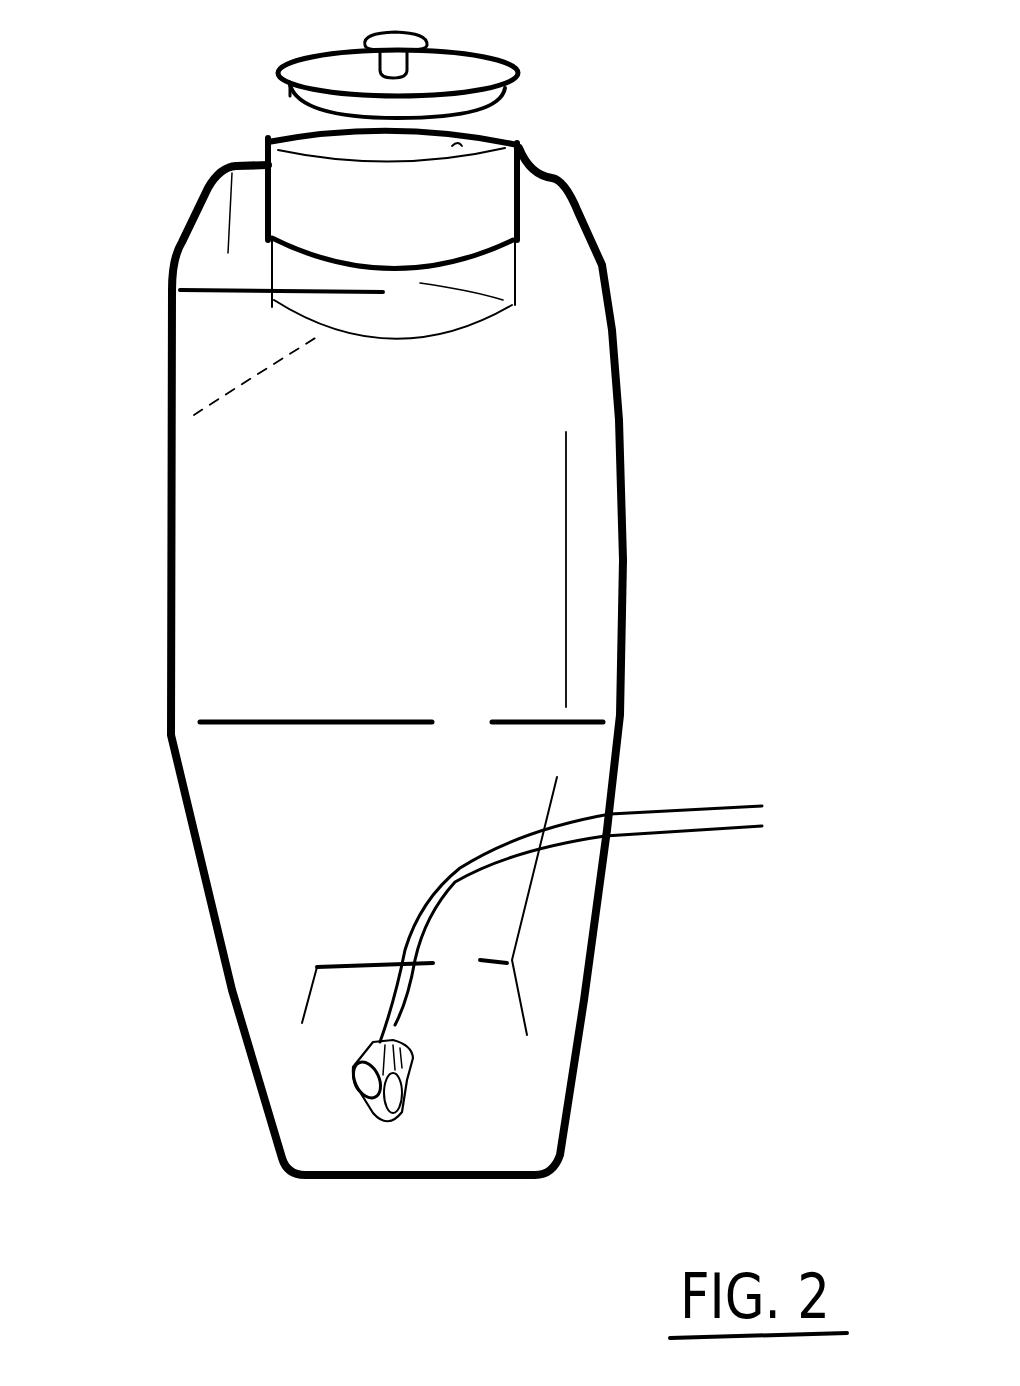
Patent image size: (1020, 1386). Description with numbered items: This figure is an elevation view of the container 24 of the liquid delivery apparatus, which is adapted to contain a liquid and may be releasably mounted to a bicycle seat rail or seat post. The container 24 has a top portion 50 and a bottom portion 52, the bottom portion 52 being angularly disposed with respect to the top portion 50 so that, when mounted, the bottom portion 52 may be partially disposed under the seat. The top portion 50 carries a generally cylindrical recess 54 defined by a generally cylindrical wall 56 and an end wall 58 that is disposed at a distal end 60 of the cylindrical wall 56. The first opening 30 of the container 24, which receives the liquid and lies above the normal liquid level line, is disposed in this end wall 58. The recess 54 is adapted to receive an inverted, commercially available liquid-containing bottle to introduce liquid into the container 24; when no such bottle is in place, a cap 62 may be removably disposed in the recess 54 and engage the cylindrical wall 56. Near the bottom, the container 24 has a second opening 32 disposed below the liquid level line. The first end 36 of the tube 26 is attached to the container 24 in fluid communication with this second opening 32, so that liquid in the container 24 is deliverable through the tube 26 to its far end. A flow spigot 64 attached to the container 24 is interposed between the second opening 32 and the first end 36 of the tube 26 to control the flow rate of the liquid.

The container 24 is at (689, 630).
The tube 26 is at (660, 823).
The first opening 30 is at (163, 417).
The second opening 32 is at (353, 1077).
The first end 36 is at (397, 1027).
The top portion 50 is at (600, 257).
The bottom portion 52 is at (585, 967).
The cylindrical recess 54 is at (507, 278).
The cylindrical wall 56 is at (460, 143).
The end wall 58 is at (513, 308).
The distal end 60 is at (513, 305).
The cap 62 is at (500, 57).
The flow spigot 64 is at (393, 1127).